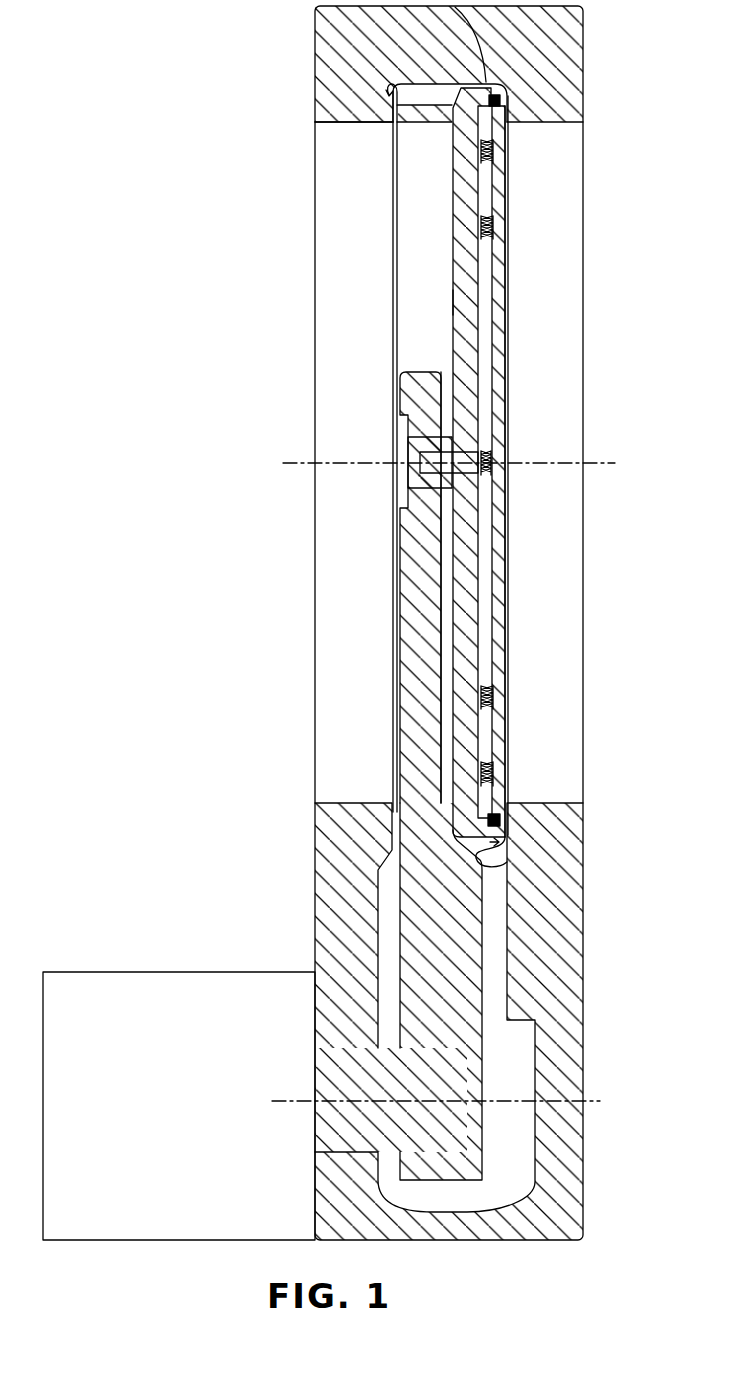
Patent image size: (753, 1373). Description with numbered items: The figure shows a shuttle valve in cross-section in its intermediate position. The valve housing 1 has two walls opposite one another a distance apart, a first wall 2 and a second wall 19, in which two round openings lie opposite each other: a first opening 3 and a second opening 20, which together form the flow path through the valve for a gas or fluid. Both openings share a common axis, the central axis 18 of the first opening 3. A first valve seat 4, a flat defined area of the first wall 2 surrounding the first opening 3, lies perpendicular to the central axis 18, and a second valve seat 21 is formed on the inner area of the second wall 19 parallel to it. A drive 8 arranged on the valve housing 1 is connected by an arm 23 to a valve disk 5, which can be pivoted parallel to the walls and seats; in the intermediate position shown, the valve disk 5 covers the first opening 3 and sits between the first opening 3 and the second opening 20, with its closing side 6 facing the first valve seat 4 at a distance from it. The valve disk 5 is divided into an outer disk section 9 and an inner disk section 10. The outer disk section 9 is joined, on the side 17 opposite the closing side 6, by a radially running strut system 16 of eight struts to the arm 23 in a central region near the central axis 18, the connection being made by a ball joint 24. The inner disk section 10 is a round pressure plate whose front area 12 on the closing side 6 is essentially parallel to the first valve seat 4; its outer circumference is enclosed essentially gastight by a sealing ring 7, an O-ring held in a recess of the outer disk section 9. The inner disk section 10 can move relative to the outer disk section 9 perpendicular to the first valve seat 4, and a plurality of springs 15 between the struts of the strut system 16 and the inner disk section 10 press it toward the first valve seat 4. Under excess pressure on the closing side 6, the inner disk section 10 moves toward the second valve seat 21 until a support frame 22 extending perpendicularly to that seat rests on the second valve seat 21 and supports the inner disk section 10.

The valve housing 1 is at (614, 34).
The first wall 2 is at (545, 108).
The first opening 3 is at (537, 452).
The first valve seat 4 is at (507, 863).
The valve disk 5 is at (423, 350).
The closing side 6 is at (581, 384).
The sealing ring 7 is at (502, 102).
The drive 8 is at (167, 1108).
The outer disk section 9 is at (455, 10).
The inner disk section 10 is at (503, 516).
The front area 12 is at (522, 582).
The springs 15 is at (495, 766).
The strut system 16 is at (463, 302).
The side opposite the closing side 17 is at (326, 405).
The central axis 18 is at (560, 462).
The second wall 19 is at (357, 107).
The second opening 20 is at (370, 452).
The second valve seat 21 is at (408, 83).
The support frame 22 is at (428, 117).
The arm 23 is at (410, 597).
The ball joint 24 is at (413, 487).